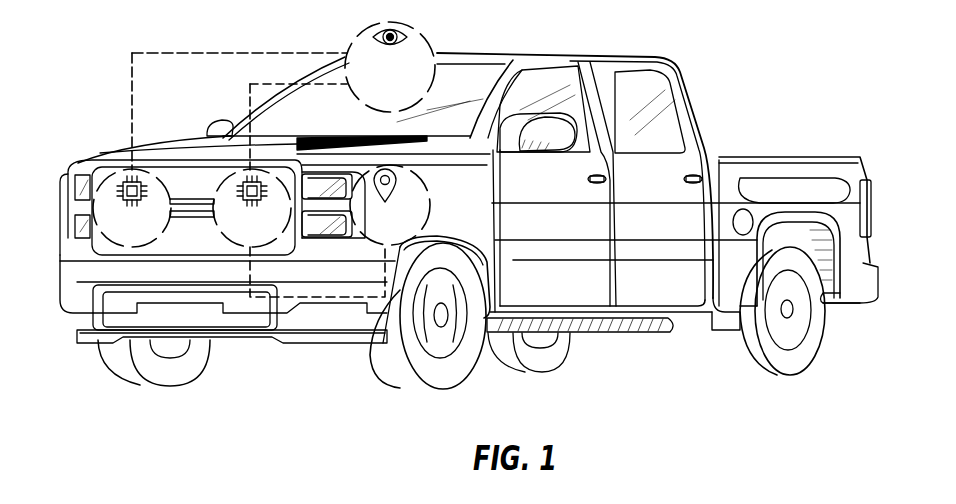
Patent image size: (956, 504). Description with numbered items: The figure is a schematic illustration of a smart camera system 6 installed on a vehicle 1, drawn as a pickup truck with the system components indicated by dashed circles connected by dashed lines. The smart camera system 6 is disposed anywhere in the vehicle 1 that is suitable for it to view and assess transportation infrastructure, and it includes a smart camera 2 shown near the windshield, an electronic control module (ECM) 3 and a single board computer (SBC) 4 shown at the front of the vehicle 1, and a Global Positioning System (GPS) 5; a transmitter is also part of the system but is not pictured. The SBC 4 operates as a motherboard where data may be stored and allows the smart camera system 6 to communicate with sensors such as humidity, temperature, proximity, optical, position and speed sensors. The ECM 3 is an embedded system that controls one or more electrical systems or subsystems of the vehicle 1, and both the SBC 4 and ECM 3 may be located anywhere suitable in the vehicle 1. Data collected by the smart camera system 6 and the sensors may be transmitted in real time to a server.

The vehicle 1 is at (631, 56).
The smart camera 2 is at (362, 36).
The electronic control module (ECM) 3 is at (116, 175).
The single board computer (SBC) 4 is at (266, 176).
The Global Positioning System (GPS) 5 is at (412, 211).
The smart camera system 6 is at (476, 86).